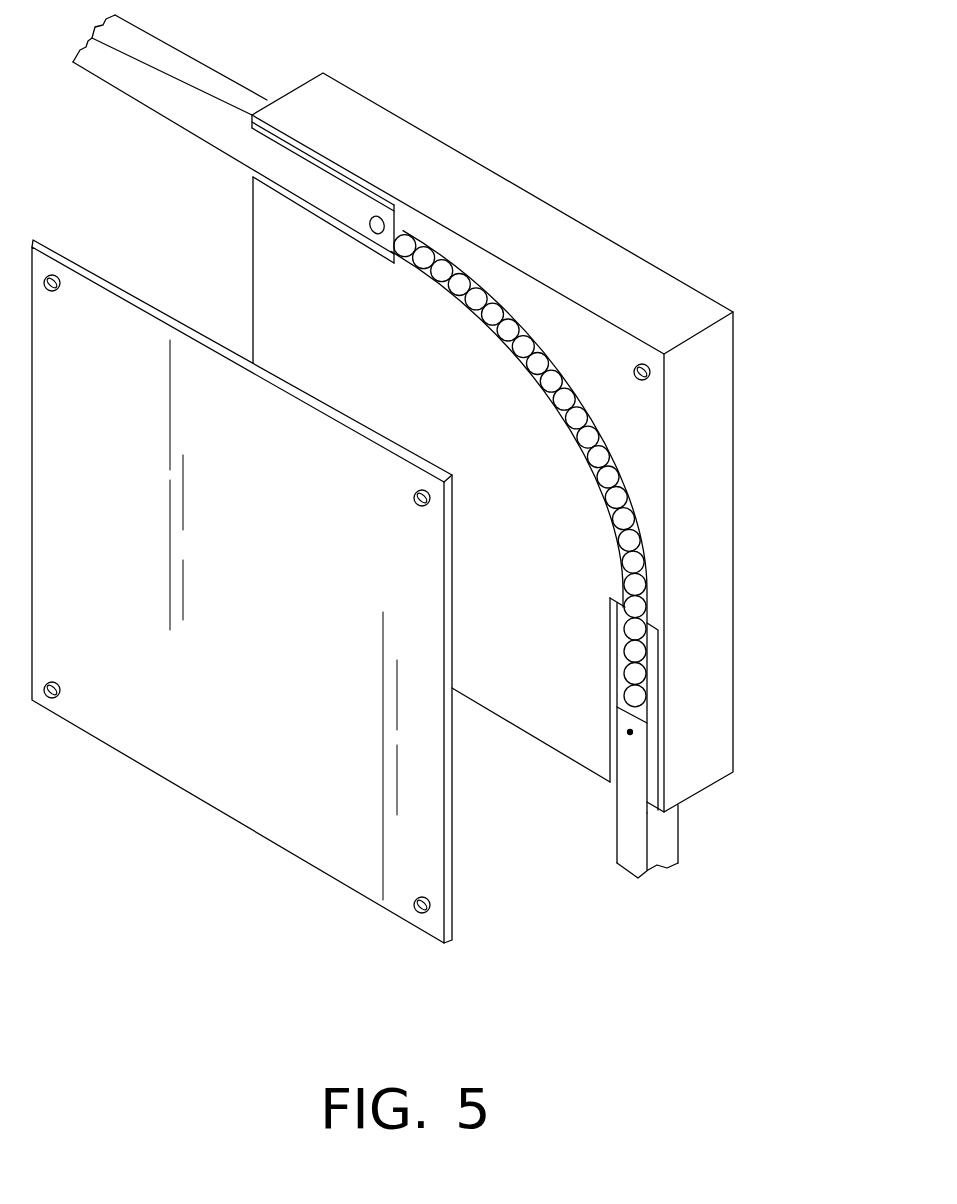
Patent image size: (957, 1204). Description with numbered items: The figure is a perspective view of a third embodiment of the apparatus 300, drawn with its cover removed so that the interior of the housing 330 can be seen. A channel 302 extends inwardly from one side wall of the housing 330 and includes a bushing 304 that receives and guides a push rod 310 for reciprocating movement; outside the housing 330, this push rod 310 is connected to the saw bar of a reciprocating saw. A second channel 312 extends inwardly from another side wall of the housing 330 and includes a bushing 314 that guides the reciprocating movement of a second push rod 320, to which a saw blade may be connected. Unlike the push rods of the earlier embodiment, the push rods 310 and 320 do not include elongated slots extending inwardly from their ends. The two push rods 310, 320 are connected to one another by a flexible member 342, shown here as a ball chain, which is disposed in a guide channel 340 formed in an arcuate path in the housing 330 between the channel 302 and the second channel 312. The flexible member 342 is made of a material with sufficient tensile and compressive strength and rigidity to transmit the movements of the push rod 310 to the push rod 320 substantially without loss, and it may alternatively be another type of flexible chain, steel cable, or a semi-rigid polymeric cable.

The apparatus 300 is at (670, 244).
The channel 302 is at (252, 178).
The bushing 304 is at (310, 210).
The push rod 310 is at (153, 58).
The second channel 312 is at (622, 614).
The bushing 314 is at (618, 652).
The push rod 320 is at (663, 847).
The housing 330 is at (705, 470).
The guide channel 340 is at (492, 312).
The flexible member 342 is at (542, 357).